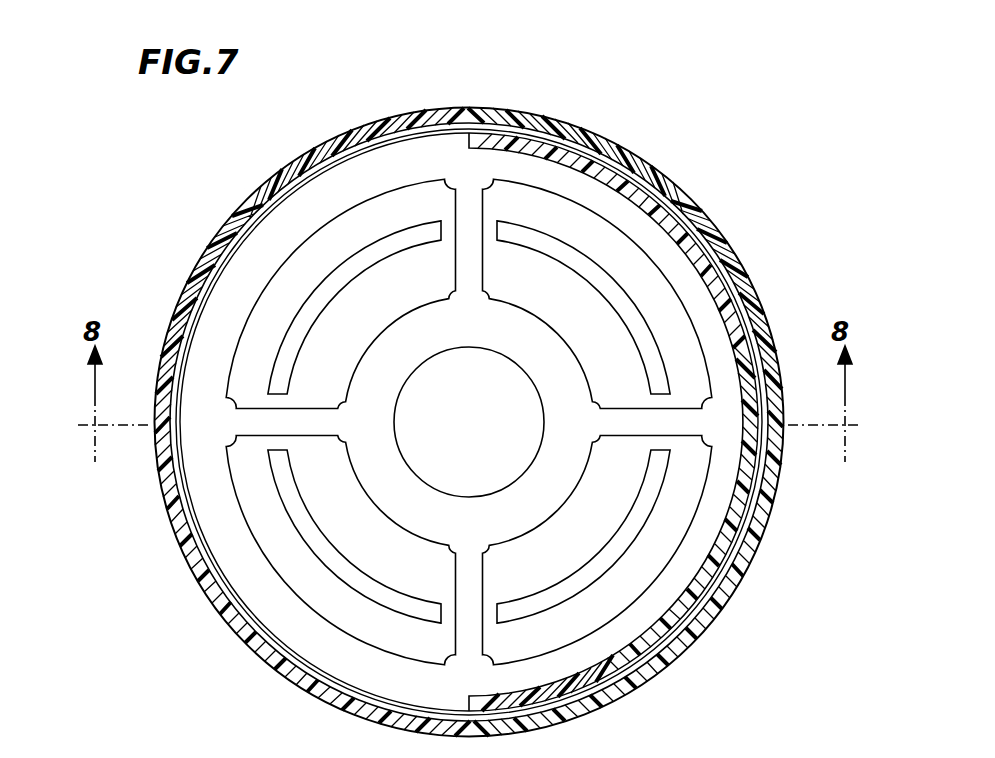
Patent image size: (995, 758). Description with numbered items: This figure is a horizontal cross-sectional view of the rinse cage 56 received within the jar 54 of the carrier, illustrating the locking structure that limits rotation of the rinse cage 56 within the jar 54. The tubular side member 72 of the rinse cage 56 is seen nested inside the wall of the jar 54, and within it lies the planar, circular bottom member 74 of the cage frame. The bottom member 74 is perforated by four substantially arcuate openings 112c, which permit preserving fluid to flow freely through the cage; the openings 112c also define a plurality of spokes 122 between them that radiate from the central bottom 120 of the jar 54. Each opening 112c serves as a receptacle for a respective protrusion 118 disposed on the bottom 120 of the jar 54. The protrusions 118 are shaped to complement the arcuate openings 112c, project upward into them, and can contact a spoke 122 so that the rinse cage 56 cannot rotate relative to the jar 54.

The jar 54 is at (578, 119).
The rinse cage 56 is at (413, 164).
The side member 72 is at (496, 137).
The bottom member 74 is at (285, 236).
The protrusion 118 is at (297, 323).
The opening 112c is at (258, 346).
The bottom 120 is at (487, 434).
The spoke 122 is at (465, 198).